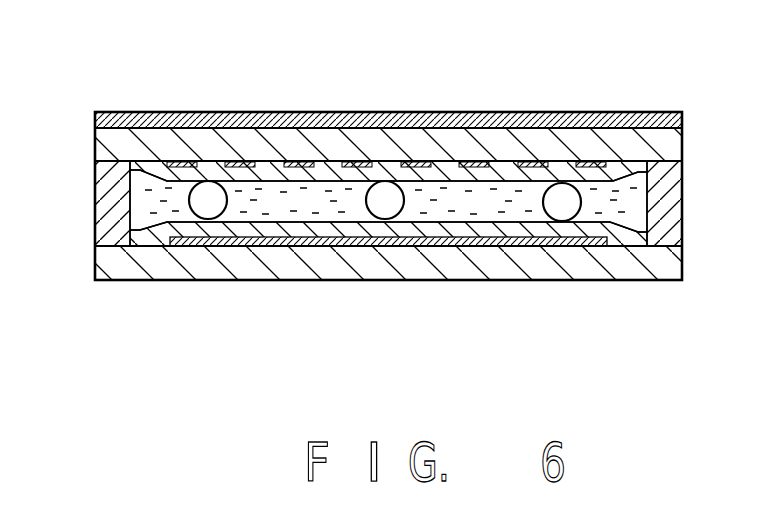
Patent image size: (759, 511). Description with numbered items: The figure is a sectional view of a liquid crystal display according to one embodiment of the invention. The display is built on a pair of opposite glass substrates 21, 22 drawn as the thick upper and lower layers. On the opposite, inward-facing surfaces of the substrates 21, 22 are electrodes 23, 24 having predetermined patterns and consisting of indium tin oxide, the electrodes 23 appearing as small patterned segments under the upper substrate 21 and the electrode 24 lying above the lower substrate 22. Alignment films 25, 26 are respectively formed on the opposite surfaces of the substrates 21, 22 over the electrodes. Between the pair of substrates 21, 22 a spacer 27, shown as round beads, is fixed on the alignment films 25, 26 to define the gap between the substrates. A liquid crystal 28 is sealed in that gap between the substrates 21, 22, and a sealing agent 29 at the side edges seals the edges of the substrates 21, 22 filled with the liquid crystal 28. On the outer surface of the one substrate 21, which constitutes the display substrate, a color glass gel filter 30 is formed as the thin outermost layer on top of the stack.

The glass substrate 21 is at (186, 140).
The glass substrate 22 is at (152, 268).
The electrode 23 is at (366, 160).
The electrode 24 is at (264, 240).
The alignment film 25 is at (568, 163).
The alignment film 26 is at (486, 232).
The spacer 27 is at (200, 203).
The liquid crystal 28 is at (614, 205).
The sealing agent 29 is at (675, 231).
The color glass gel filter 30 is at (661, 122).